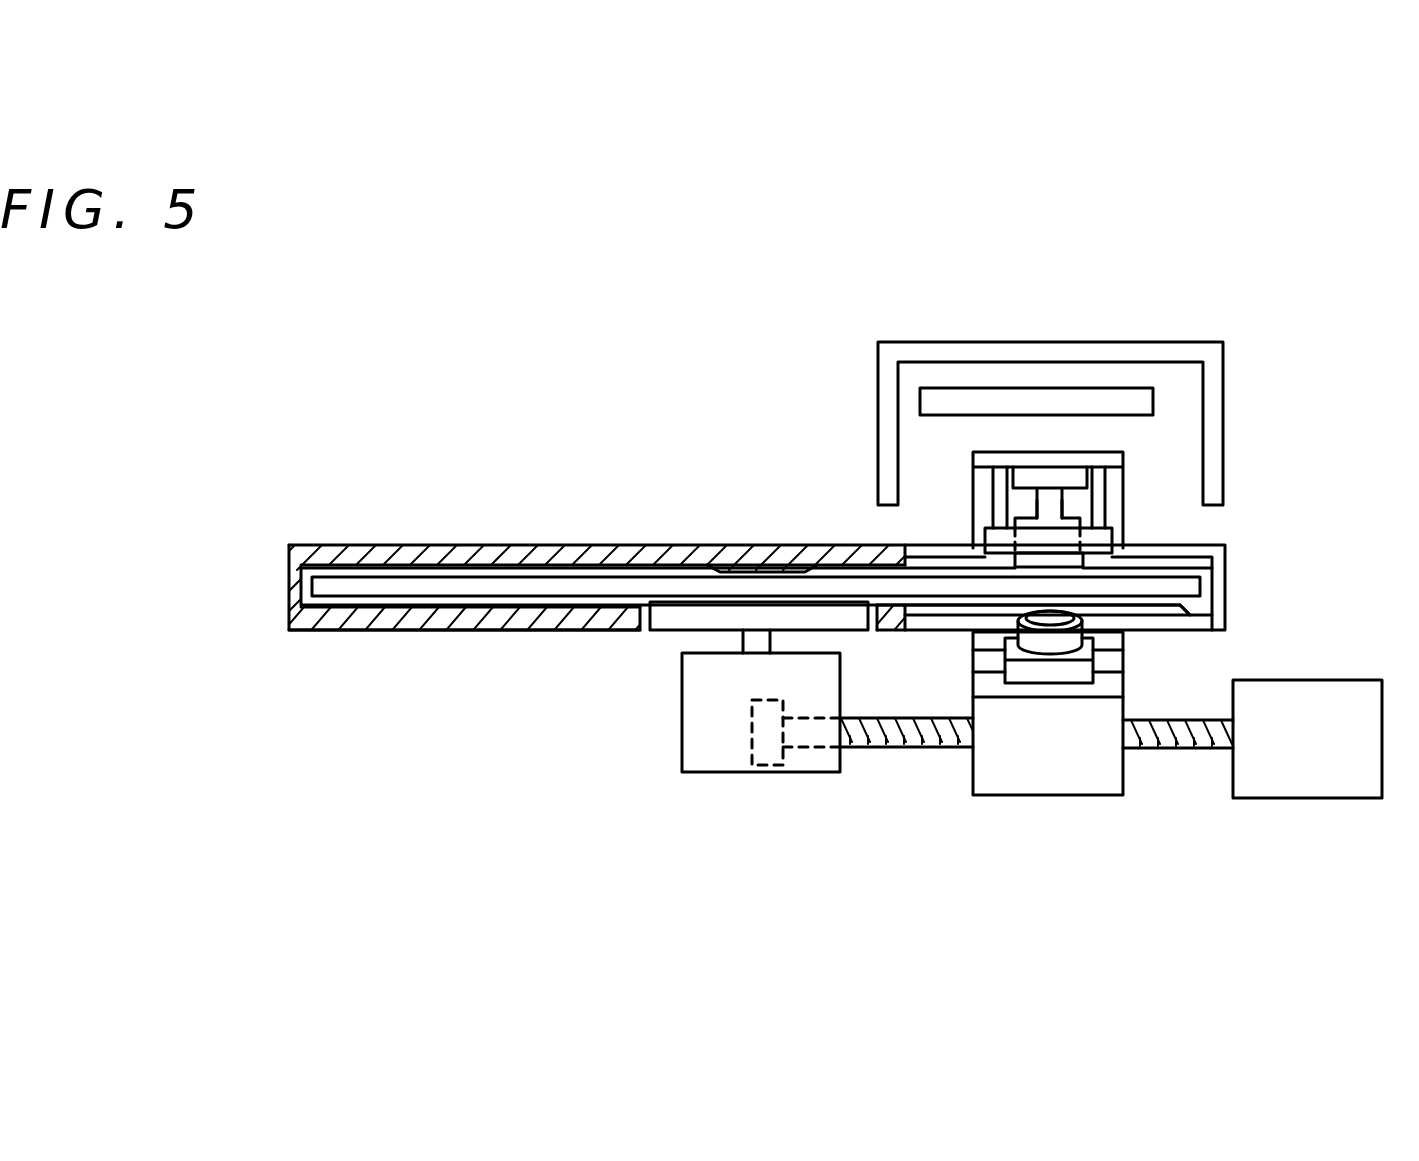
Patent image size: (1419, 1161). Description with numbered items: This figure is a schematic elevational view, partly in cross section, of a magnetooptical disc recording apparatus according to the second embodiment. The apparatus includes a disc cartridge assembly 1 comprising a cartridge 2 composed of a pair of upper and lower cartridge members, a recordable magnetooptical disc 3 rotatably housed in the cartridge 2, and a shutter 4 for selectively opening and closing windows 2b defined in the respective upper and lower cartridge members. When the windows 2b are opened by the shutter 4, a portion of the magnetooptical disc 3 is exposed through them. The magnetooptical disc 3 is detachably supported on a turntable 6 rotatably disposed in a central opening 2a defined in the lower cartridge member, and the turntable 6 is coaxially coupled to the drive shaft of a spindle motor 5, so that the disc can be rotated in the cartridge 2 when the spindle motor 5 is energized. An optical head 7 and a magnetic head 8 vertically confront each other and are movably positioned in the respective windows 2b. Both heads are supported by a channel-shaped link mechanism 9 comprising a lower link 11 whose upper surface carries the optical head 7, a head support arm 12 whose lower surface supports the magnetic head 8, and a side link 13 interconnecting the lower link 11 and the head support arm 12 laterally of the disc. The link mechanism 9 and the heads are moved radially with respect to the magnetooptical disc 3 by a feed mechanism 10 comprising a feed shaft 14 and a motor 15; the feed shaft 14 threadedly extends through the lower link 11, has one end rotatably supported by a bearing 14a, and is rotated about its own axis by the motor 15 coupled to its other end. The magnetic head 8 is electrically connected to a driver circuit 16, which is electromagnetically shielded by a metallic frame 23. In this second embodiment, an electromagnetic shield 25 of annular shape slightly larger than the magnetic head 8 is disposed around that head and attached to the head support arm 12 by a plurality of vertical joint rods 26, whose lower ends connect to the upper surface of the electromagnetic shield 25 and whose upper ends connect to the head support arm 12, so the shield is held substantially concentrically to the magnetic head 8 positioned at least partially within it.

The disc cartridge assembly 1 is at (638, 540).
The cartridge 2 is at (402, 545).
The central opening 2a is at (662, 622).
The windows 2b is at (1190, 632).
The magnetooptical disc 3 is at (362, 590).
The shutter 4 is at (1227, 590).
The spindle motor 5 is at (695, 743).
The turntable 6 is at (702, 613).
The optical head 7 is at (1047, 635).
The magnetic head 8 is at (1083, 506).
The link mechanism 9 is at (1130, 446).
The feed mechanism 10 is at (1188, 762).
The lower link 11 is at (1073, 785).
The head support arm 12 is at (1083, 462).
The side link 13 is at (1125, 643).
The feed shaft 14 is at (906, 750).
The bearing 14a is at (748, 725).
The motor 15 is at (1312, 785).
The driver circuit 16 is at (1028, 402).
The metallic frame 23 is at (925, 350).
The electromagnetic shield 25 is at (1102, 540).
The joint rods 26 is at (1023, 517).